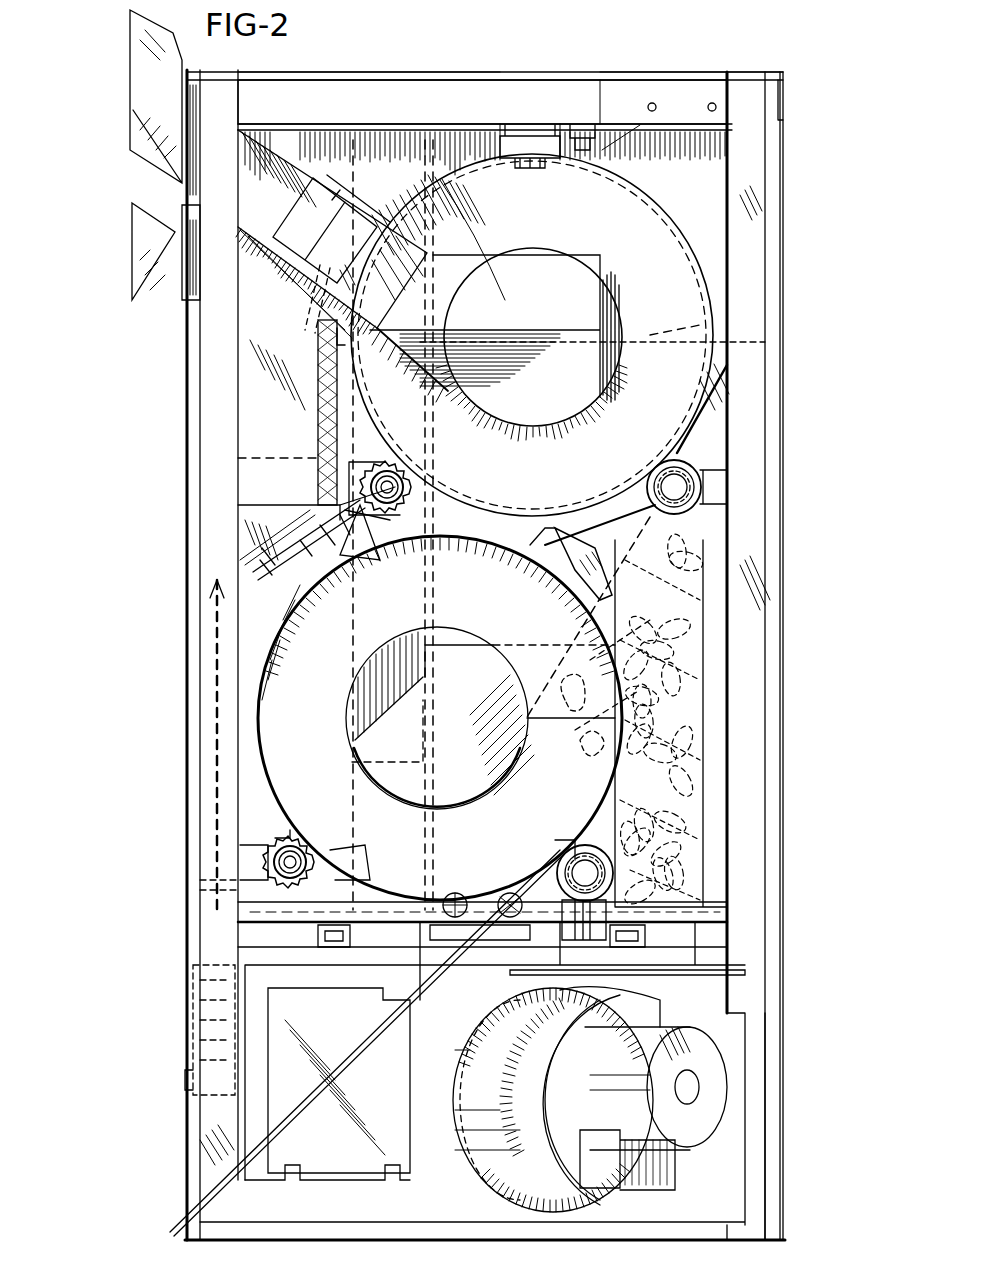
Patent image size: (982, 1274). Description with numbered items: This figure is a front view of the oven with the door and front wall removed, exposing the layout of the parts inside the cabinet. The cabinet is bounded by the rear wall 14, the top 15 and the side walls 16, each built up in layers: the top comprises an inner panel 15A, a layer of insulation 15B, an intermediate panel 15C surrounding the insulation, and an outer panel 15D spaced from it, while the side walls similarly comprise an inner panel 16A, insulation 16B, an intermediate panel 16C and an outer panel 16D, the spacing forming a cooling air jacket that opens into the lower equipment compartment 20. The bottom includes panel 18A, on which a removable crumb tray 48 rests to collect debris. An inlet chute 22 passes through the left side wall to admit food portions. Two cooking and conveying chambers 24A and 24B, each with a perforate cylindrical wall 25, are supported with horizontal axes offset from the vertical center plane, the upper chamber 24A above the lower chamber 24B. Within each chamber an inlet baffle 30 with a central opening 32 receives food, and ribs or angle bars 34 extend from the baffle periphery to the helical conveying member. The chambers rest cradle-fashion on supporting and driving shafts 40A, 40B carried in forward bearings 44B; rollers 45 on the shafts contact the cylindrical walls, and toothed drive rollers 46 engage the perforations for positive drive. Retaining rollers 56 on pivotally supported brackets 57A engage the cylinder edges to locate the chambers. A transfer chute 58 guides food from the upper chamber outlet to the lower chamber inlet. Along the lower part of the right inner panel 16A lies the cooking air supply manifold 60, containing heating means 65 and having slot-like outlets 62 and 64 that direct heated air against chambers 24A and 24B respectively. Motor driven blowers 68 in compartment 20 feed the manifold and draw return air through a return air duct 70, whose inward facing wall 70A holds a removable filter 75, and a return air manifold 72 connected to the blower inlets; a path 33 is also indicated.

The rear wall 14 is at (187, 535).
The top 15 is at (478, 70).
The inner panel 15A is at (515, 125).
The layer of insulation 15B is at (385, 100).
The intermediate panel 15C is at (692, 82).
The outer panel 15D is at (595, 82).
The side walls 16 is at (187, 330).
The inner panel 16A is at (740, 500).
The layer of insulation 16B is at (745, 565).
The intermediate panel 16C is at (765, 618).
The outer panel 16D is at (783, 738).
The bottom panel 18A is at (240, 925).
The lower equipment compartment 20 is at (400, 1168).
The inlet chute 22 is at (300, 160).
The upper cooking and conveying chamber 24A is at (620, 200).
The lower cooking and conveying chamber 24B is at (300, 670).
The perforate cylindrical wall 25 is at (765, 307).
The inlet baffle 30 is at (668, 290).
The central opening 32 is at (610, 320).
The conveyor path 33 is at (335, 1076).
The ribs or angle bars 34 is at (448, 230).
The supporting and driving shaft 40A is at (400, 478).
The supporting and driving shaft 40B is at (320, 850).
The forward bearings 44B is at (300, 830).
The front and rear rollers 45 is at (650, 480).
The toothed drive rollers 46 is at (405, 495).
The crumb tray 48 is at (238, 905).
The retaining rollers 56 is at (545, 158).
The brackets 57A is at (560, 140).
The transfer chute 58 is at (735, 380).
The cooking air supply manifold 60 is at (575, 555).
The slot-like outlet 62 is at (560, 545).
The slot-like outlet 64 is at (500, 895).
The heating means 65 is at (578, 755).
The motor driven blowers 68 is at (520, 1175).
The return air duct 70 is at (262, 380).
The inward facing wall 70A is at (320, 330).
The return air manifold 72 is at (332, 1037).
The filter 75 is at (315, 420).